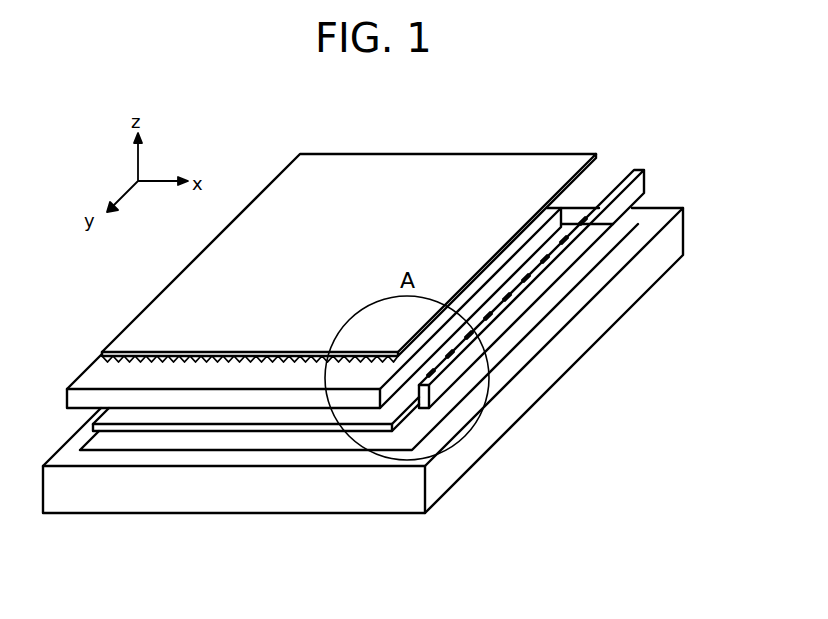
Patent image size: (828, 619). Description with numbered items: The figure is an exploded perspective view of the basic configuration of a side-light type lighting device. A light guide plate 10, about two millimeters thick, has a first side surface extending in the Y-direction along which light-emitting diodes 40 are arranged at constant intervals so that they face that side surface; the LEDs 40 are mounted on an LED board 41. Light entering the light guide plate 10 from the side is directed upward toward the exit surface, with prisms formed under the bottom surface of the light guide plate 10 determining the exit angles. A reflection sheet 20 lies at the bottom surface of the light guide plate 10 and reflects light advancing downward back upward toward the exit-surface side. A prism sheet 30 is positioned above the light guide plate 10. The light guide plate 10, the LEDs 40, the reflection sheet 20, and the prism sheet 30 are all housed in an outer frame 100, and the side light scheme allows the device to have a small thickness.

The light guide plate 10 is at (140, 398).
The reflection sheet 20 is at (168, 428).
The prism sheet 30 is at (423, 168).
The light-emitting diodes 40 is at (453, 372).
The LED board 41 is at (503, 340).
The outer frame 100 is at (578, 340).